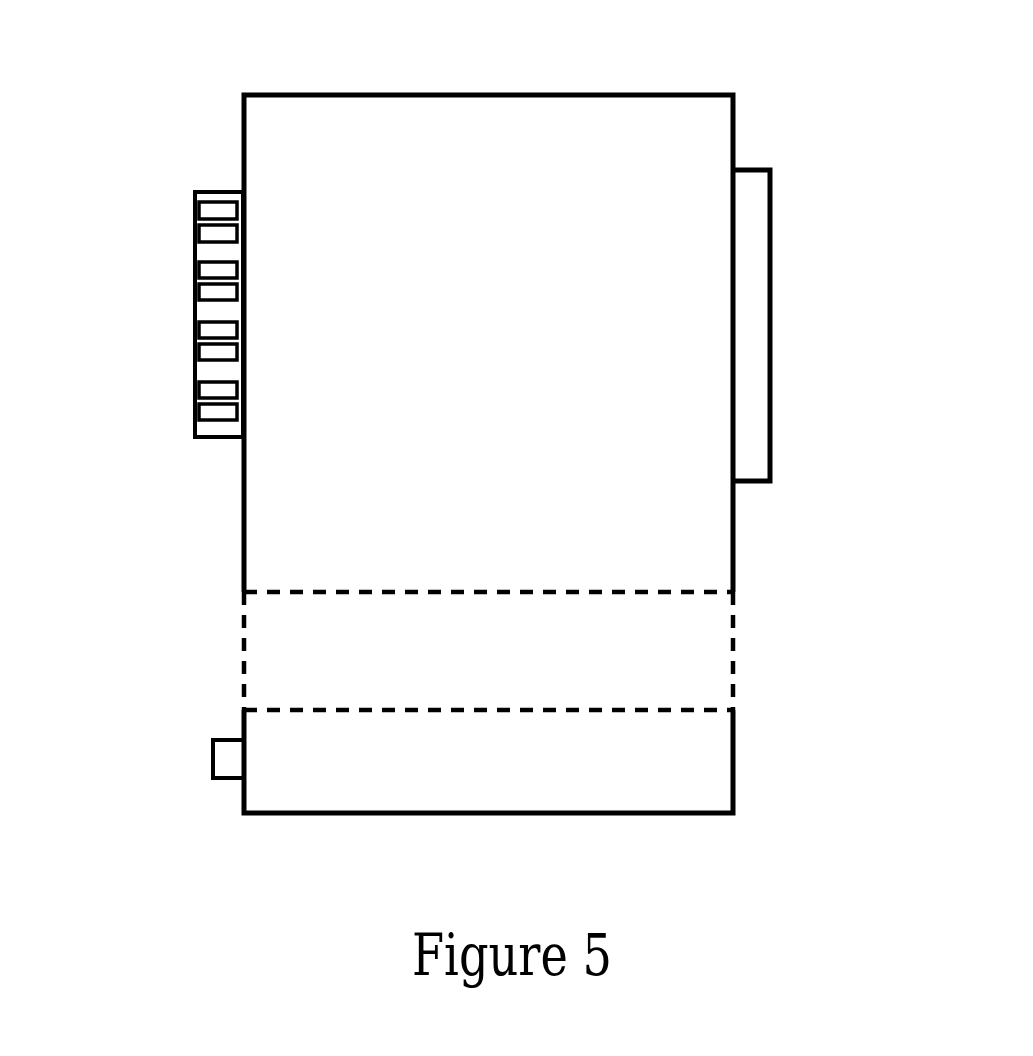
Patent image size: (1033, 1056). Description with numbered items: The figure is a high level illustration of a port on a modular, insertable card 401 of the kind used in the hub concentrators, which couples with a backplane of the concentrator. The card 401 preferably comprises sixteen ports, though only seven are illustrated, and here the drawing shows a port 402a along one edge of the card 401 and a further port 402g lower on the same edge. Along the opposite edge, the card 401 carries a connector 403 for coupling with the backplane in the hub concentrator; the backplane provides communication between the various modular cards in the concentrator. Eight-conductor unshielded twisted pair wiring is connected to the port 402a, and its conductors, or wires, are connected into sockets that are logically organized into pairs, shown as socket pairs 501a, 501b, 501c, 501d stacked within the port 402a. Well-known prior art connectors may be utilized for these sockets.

The card 401 is at (468, 72).
The connector 403 is at (772, 196).
The port 402a is at (224, 188).
The socket pair 501a is at (194, 221).
The socket pair 501b is at (194, 284).
The socket pair 501c is at (194, 348).
The socket pair 501d is at (194, 411).
The port 402g is at (234, 738).